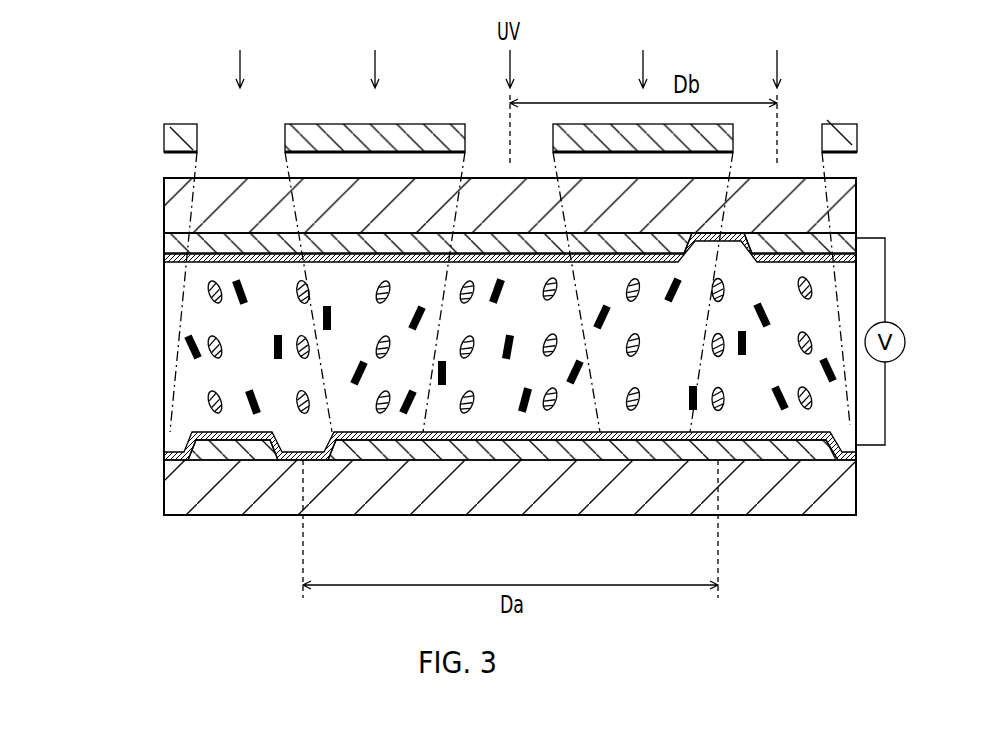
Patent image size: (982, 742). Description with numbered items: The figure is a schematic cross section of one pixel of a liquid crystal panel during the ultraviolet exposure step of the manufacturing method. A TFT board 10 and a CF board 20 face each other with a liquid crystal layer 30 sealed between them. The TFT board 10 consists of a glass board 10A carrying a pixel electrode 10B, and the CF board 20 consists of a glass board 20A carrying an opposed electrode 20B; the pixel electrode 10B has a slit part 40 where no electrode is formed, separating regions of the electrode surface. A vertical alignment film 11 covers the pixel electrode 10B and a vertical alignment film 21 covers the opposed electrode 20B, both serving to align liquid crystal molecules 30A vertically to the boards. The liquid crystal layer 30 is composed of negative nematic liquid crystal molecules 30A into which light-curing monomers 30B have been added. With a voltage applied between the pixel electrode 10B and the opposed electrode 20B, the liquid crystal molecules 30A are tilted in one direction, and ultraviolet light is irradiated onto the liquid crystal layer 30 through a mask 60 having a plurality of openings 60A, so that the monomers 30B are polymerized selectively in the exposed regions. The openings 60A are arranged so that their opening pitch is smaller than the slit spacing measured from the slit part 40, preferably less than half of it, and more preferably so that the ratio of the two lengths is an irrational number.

The TFT board 10 is at (100, 450).
The glass board 10A is at (178, 492).
The pixel electrode 10B is at (178, 456).
The vertical alignment film 11 is at (178, 436).
The CF board 20 is at (100, 185).
The glass board 20A is at (178, 201).
The opposed electrode 20B is at (177, 242).
The vertical alignment film 21 is at (170, 258).
The liquid crystal layer 30 is at (140, 265).
The liquid crystal molecules 30A is at (384, 413).
The monomers 30B is at (521, 414).
The slit part 40 is at (288, 478).
The mask 60 is at (858, 124).
The openings 60A is at (222, 139).